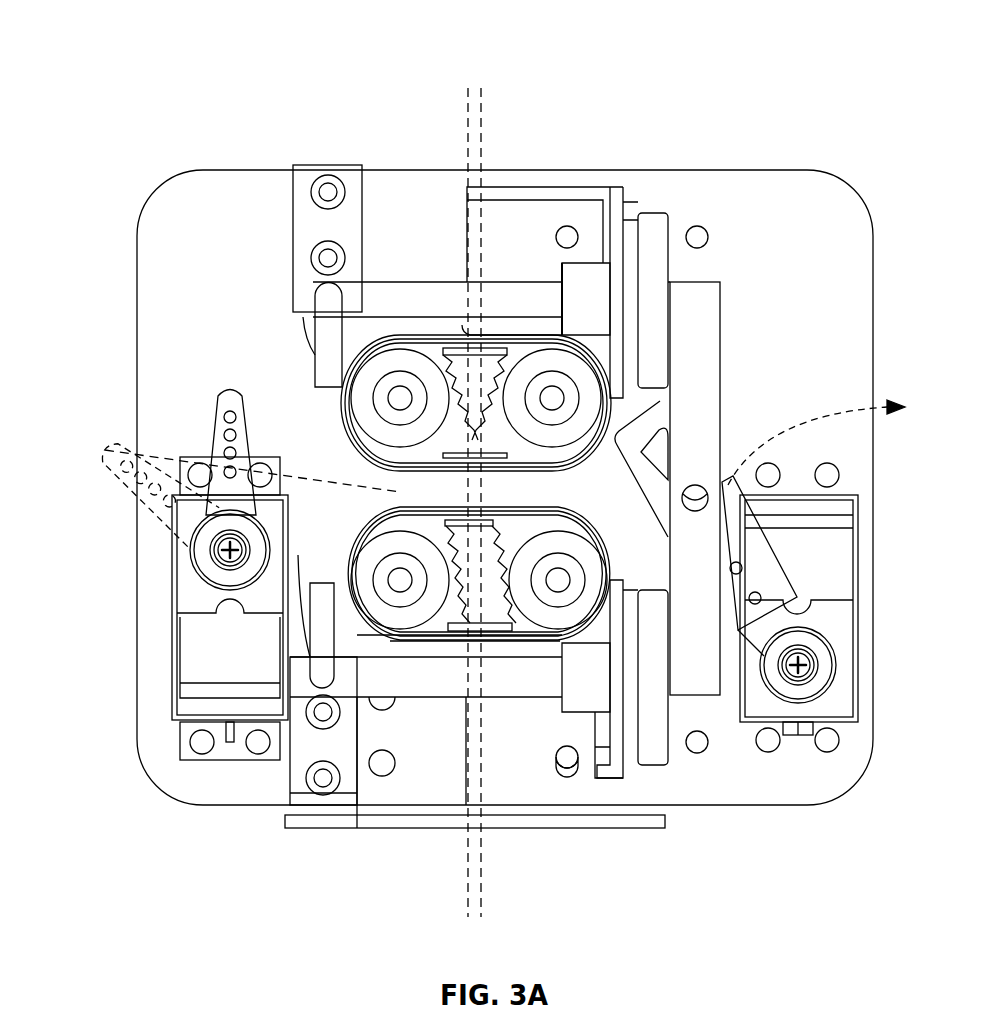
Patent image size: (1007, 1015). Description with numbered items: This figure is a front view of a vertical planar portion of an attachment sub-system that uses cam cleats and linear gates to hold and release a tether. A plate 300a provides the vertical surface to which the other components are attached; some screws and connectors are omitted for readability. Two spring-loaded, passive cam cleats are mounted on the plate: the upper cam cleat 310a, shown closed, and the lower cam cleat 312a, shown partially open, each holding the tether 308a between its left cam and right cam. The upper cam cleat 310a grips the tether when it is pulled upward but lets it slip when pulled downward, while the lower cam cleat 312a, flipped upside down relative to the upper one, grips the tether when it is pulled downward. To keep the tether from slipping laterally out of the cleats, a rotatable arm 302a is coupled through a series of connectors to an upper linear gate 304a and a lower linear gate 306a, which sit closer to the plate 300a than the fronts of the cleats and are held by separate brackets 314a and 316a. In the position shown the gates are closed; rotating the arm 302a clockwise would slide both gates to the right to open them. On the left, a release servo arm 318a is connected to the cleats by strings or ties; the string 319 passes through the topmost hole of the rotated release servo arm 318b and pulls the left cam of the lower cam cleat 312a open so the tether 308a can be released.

The plate 300a is at (750, 170).
The rotatable arm 302a is at (797, 574).
The upper linear gate 304a is at (507, 278).
The lower linear gate 306a is at (517, 697).
The tether 308a is at (473, 97).
The upper cam cleat 310a is at (440, 334).
The lower cam cleat 312a is at (418, 637).
The bracket 314a is at (632, 202).
The bracket 316a is at (627, 778).
The release servo arm 318a is at (213, 425).
The rotated release servo arm 318b is at (100, 463).
The string 319 is at (315, 480).